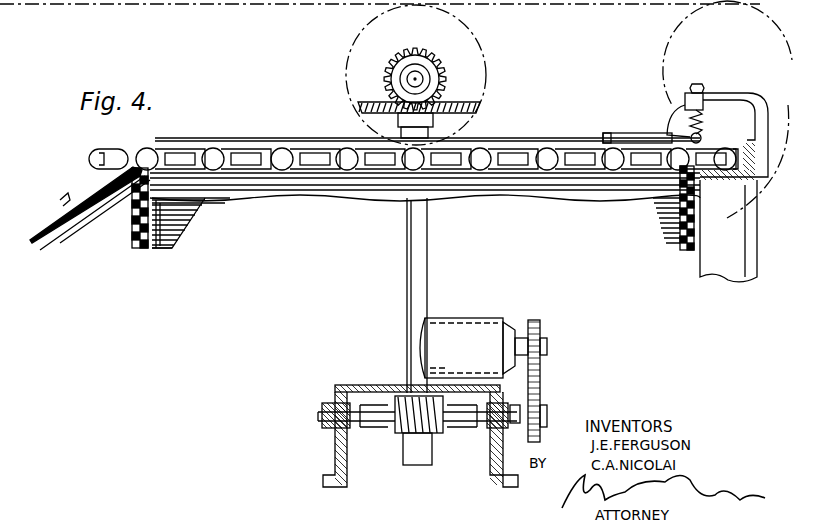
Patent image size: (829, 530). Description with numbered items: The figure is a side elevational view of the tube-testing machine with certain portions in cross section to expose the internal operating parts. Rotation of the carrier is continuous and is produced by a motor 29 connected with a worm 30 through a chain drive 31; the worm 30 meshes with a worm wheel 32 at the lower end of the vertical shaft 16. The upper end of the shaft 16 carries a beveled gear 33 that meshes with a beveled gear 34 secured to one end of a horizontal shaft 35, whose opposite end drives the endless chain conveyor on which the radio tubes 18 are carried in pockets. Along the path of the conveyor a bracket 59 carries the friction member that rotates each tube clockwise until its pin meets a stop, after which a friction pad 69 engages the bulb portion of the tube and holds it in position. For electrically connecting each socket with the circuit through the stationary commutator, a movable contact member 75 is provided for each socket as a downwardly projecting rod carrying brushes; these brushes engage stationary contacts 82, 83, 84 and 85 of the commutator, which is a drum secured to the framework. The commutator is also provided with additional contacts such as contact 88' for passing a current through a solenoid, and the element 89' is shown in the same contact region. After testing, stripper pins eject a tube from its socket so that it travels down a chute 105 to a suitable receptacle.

The shaft 16 is at (427, 295).
The radio tubes 18 is at (497, 142).
The motor 29 is at (477, 317).
The worm 30 is at (438, 430).
The chain drive 31 is at (540, 390).
The worm wheel 32 is at (375, 428).
The beveled gear 33 is at (470, 102).
The beveled gear 34 is at (428, 67).
The horizontal shaft 35 is at (422, 78).
The bracket 59 is at (712, 93).
The friction pad 69 is at (623, 133).
The movable contact member 75 is at (131, 256).
The stationary contact 82 is at (185, 222).
The stationary contact 83 is at (180, 227).
The stationary contact 84 is at (170, 236).
The stationary contact 85 is at (162, 248).
The additional contact 88' is at (206, 215).
The plate 89' is at (202, 226).
The chute 105 is at (87, 207).